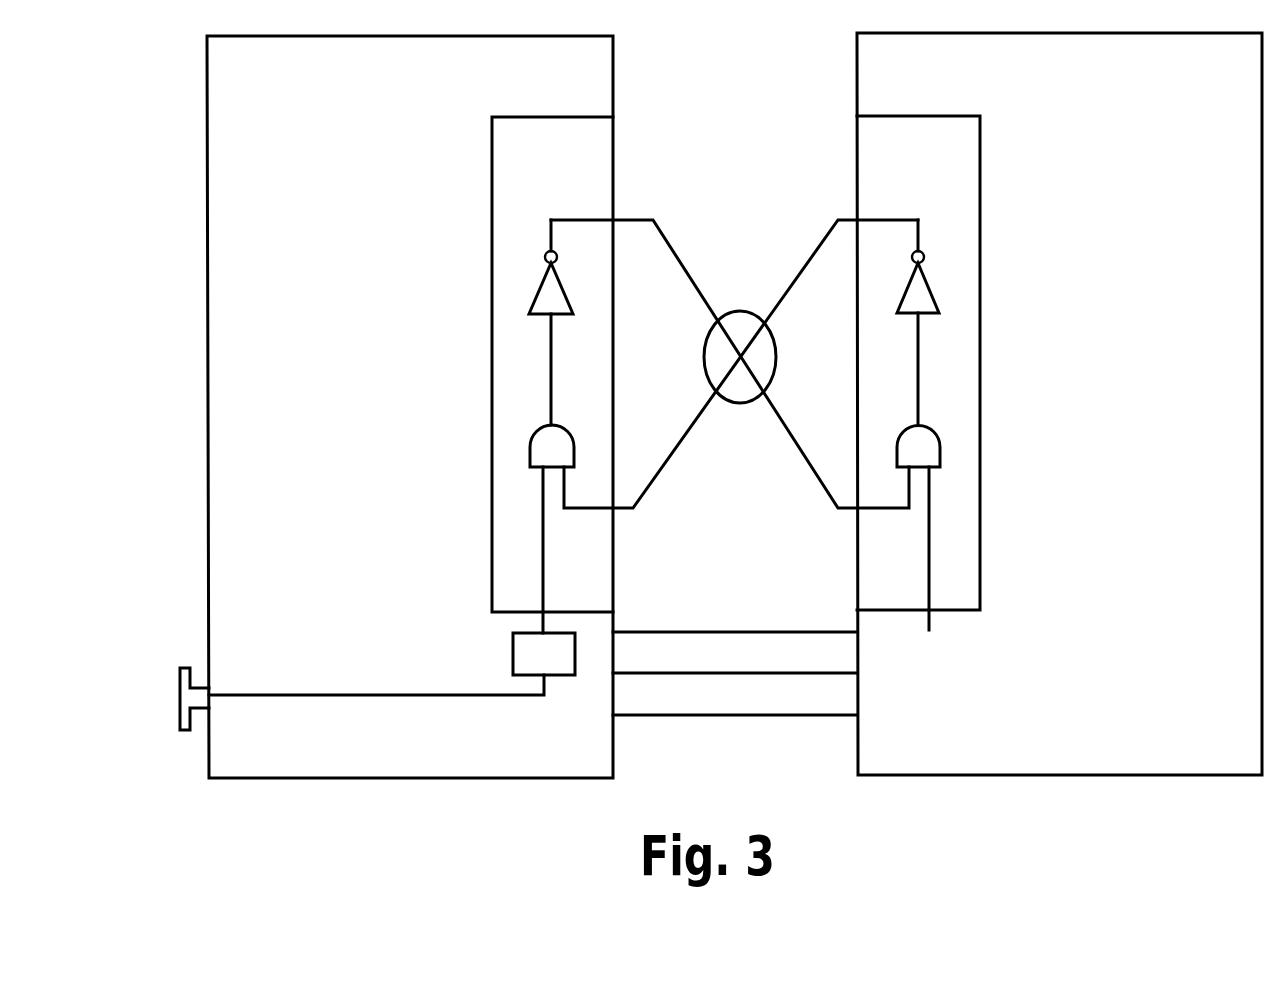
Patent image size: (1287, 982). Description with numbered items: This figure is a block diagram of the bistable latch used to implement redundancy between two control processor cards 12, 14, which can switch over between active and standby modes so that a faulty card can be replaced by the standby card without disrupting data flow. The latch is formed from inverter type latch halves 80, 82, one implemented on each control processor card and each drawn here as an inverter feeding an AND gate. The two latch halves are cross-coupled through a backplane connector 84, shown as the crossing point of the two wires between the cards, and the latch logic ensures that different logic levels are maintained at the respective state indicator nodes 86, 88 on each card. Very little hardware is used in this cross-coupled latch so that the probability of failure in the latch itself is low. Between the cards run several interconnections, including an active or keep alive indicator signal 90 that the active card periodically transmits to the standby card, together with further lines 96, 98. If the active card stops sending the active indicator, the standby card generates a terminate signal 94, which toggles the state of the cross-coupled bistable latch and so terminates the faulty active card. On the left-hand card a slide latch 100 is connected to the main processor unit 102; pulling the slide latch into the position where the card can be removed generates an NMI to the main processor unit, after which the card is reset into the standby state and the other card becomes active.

The control processor card 12 is at (397, 468).
The control processor card 14 is at (1047, 463).
The latch half 80 is at (592, 118).
The latch half 82 is at (878, 116).
The backplane connector 84 is at (738, 404).
The state indicator node 86 is at (592, 221).
The state indicator node 88 is at (878, 219).
The active indicator signal 90 is at (737, 715).
The terminate signal 94 is at (946, 727).
The interconnect signal line 96 is at (685, 632).
The interconnect signal line 98 is at (737, 673).
The slide latch 100 is at (190, 668).
The main processor unit 102 is at (513, 652).